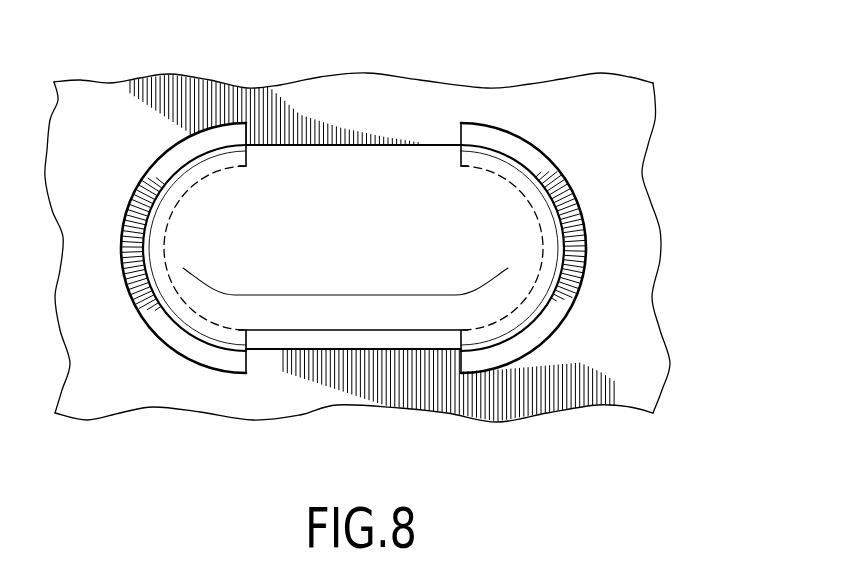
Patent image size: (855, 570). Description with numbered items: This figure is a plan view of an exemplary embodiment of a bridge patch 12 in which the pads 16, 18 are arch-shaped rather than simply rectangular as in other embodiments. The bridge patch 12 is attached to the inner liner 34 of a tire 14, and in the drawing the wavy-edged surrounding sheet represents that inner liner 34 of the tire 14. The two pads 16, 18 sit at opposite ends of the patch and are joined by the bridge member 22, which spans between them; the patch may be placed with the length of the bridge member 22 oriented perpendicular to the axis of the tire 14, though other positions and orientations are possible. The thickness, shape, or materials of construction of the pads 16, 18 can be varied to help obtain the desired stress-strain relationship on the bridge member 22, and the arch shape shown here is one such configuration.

The bridge patch 12 is at (185, 373).
The tire 14 is at (632, 385).
The pad 16 is at (147, 178).
The pad 18 is at (498, 138).
The bridge member 22 is at (368, 238).
The inner liner 34 is at (622, 118).